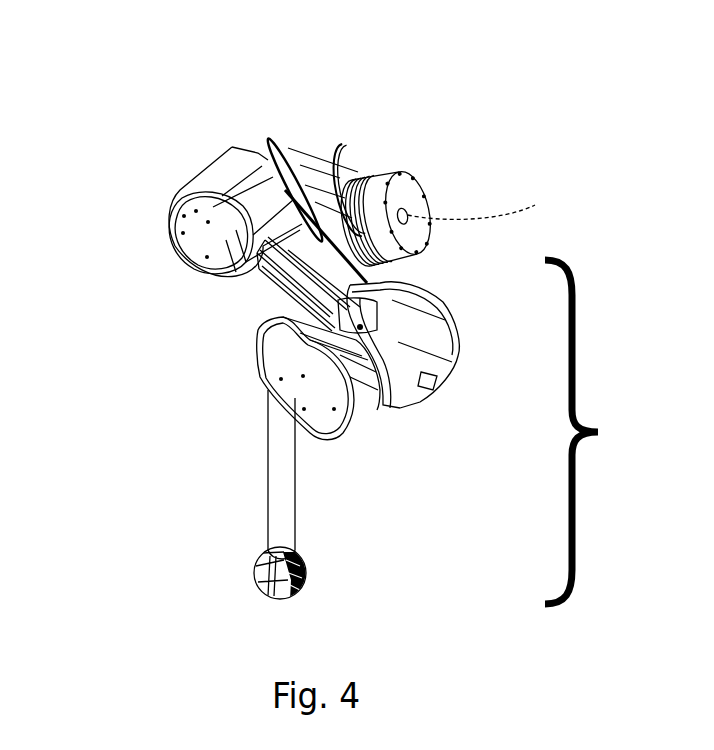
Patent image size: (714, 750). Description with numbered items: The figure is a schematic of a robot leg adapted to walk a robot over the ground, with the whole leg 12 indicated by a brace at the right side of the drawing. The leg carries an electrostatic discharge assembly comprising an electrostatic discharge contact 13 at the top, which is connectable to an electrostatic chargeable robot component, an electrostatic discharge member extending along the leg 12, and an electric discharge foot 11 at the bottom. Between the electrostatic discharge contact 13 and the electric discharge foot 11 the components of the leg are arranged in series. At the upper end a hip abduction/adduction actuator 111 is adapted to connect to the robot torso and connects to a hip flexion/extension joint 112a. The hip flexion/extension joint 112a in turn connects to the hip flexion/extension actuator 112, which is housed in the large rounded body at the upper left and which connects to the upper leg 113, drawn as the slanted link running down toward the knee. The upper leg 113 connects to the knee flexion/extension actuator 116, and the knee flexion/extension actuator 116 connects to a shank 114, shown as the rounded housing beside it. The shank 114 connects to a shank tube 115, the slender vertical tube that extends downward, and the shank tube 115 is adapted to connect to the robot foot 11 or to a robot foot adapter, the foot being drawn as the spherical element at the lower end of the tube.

The electric discharge foot 11 is at (336, 589).
The leg 12 is at (601, 432).
The electrostatic discharge contact 13 is at (529, 192).
The hip abduction/adduction actuator 111 is at (449, 145).
The hip flexion/extension actuator 112 is at (166, 189).
The hip flexion/extension joint 112a is at (210, 134).
The upper leg 113 is at (202, 261).
The shank 114 is at (202, 378).
The shank tube 115 is at (151, 474).
The knee flexion/extension actuator 116 is at (446, 358).